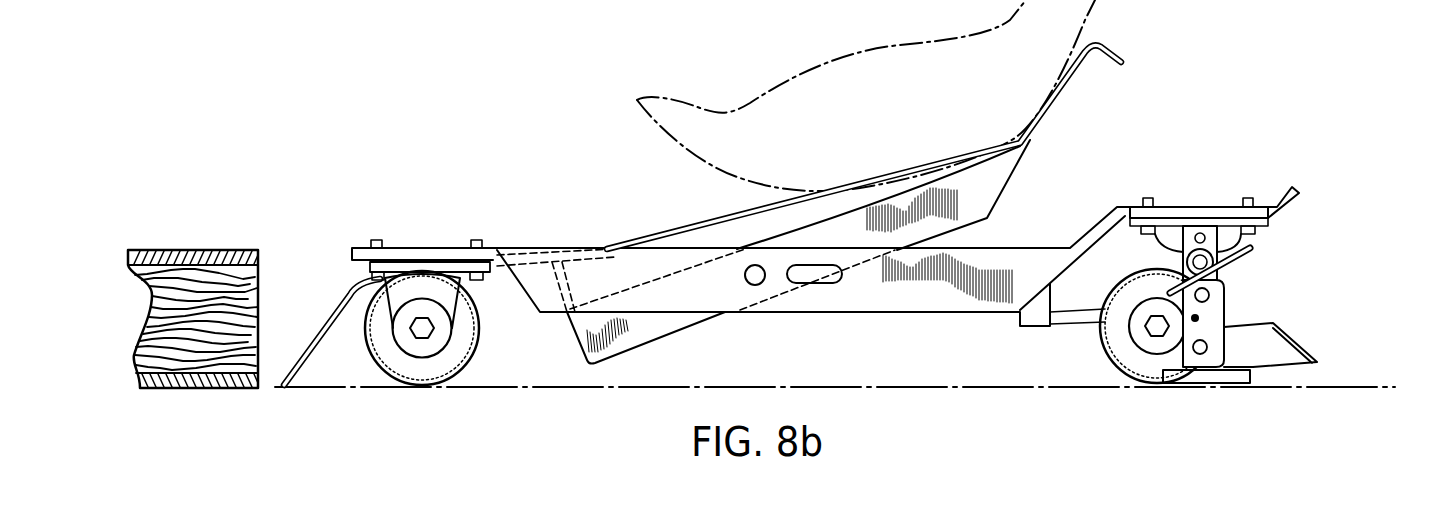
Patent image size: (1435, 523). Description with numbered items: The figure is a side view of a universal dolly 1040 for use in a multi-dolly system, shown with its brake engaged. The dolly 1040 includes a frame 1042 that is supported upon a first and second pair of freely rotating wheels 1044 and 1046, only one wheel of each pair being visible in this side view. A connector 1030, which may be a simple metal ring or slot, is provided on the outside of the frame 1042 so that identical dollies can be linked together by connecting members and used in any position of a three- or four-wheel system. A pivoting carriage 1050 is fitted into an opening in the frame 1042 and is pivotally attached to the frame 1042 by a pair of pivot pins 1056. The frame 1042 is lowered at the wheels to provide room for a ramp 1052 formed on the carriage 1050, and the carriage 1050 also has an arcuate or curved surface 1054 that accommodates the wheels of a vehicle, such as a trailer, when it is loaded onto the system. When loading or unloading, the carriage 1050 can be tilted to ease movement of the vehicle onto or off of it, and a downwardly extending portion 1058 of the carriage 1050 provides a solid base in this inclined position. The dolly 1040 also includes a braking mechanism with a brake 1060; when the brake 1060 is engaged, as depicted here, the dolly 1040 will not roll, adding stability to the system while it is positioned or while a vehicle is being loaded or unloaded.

The connector 1030 is at (821, 286).
The universal dolly 1040 is at (762, 54).
The frame 1042 is at (893, 300).
The first pair of freely rotating wheels 1044 is at (443, 387).
The second pair of freely rotating wheels 1046 is at (1127, 372).
The pivoting carriage 1050 is at (1007, 171).
The ramp 1052 is at (329, 313).
The arcuate or curved surface 1054 is at (843, 200).
The pivot pin 1056 is at (757, 287).
The downwardly extending portion 1058 is at (578, 350).
The brake 1060 is at (1305, 270).